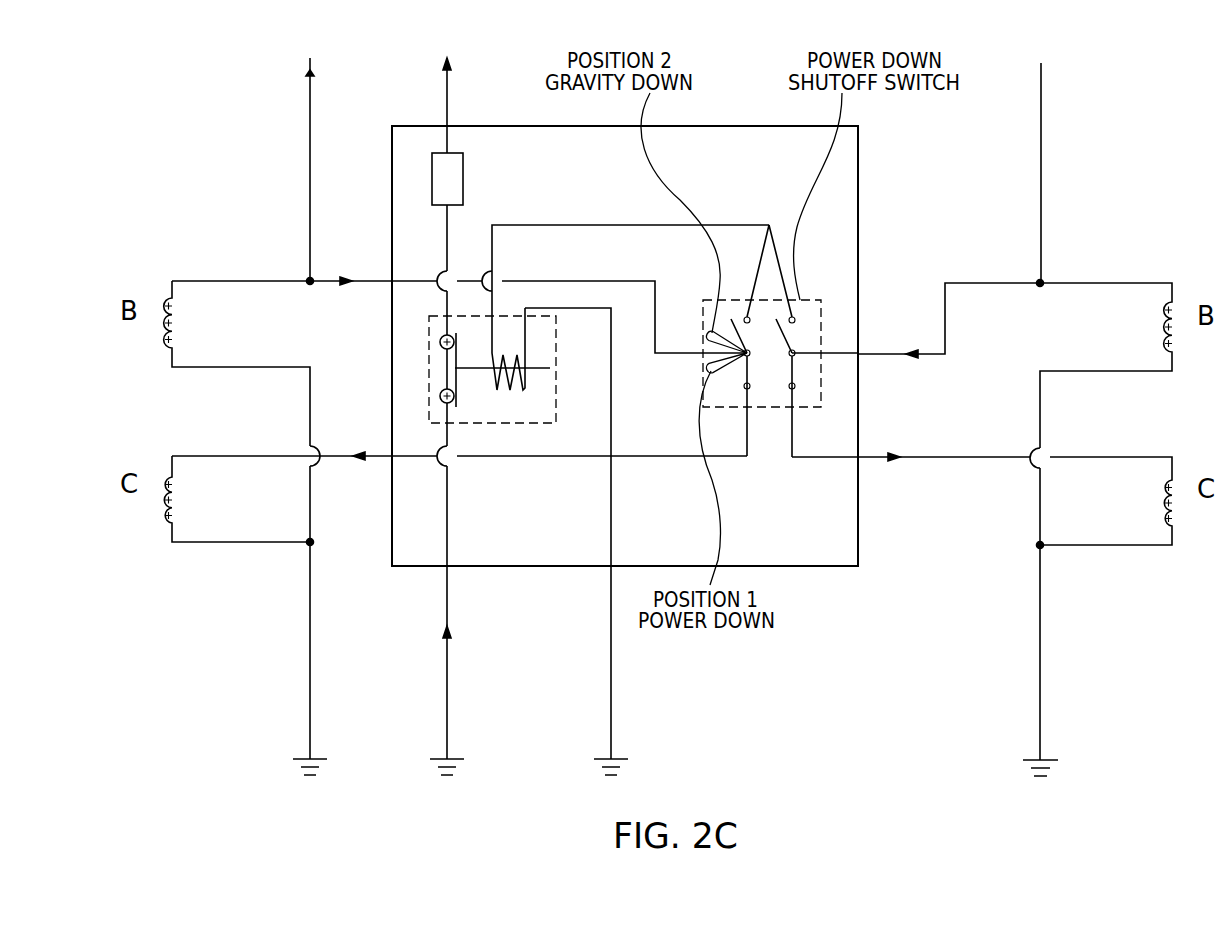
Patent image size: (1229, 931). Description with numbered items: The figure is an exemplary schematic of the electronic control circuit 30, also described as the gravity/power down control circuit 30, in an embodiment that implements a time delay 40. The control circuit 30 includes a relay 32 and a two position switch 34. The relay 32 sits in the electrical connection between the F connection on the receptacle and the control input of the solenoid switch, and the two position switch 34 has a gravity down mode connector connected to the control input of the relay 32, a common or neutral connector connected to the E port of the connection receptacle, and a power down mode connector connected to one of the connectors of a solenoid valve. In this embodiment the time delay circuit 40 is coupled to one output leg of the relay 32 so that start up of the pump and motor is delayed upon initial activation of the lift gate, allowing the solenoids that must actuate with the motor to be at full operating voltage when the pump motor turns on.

The gravity/power down control circuit 30 is at (859, 192).
The relay 32 is at (513, 413).
The two position switch 34 is at (703, 362).
The time delay 40 is at (458, 175).